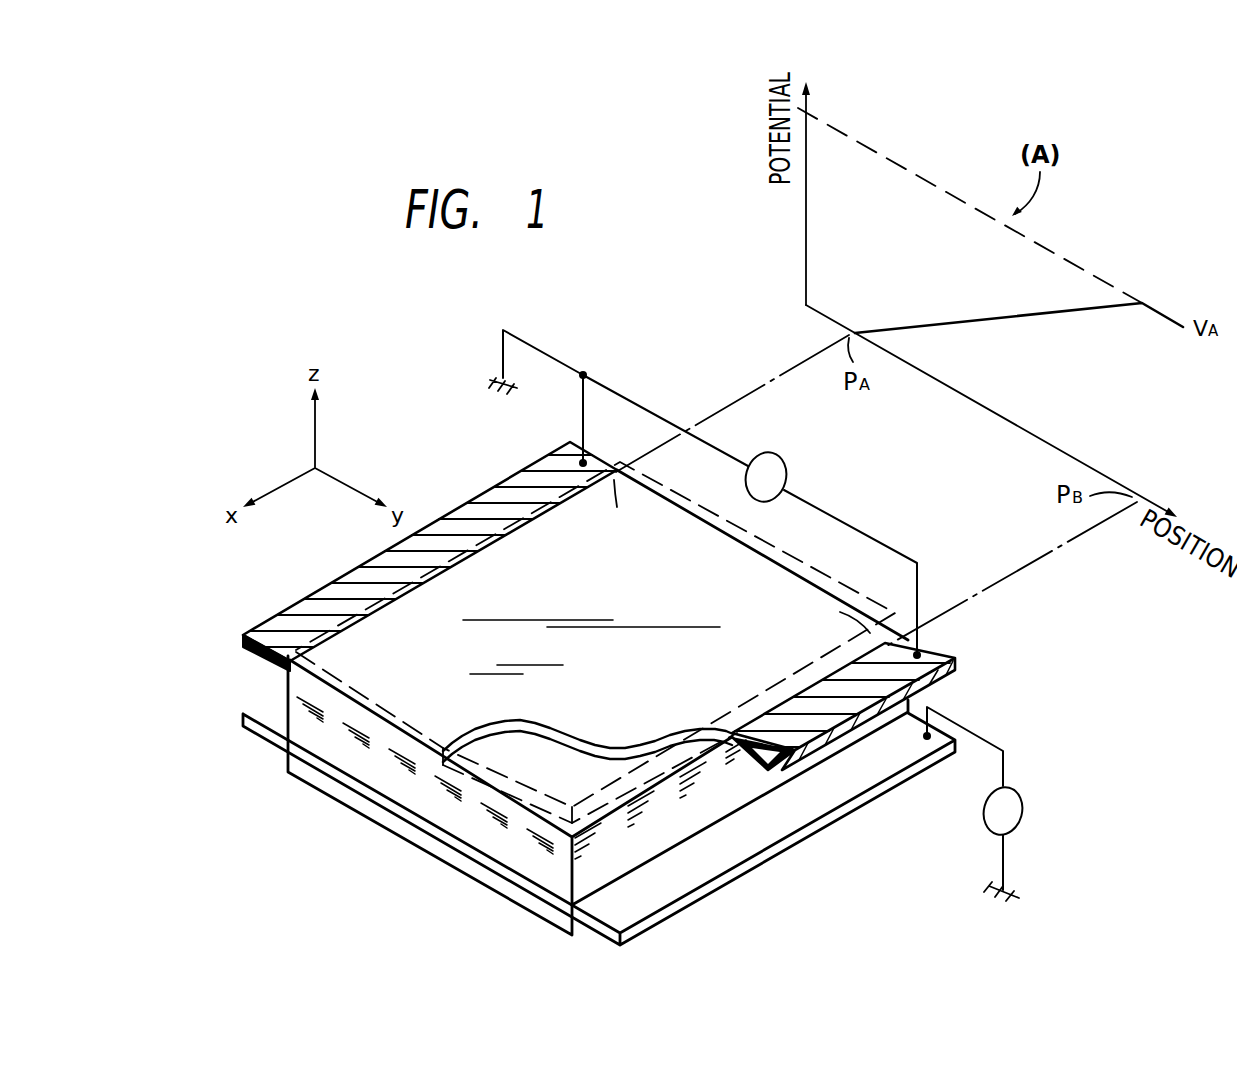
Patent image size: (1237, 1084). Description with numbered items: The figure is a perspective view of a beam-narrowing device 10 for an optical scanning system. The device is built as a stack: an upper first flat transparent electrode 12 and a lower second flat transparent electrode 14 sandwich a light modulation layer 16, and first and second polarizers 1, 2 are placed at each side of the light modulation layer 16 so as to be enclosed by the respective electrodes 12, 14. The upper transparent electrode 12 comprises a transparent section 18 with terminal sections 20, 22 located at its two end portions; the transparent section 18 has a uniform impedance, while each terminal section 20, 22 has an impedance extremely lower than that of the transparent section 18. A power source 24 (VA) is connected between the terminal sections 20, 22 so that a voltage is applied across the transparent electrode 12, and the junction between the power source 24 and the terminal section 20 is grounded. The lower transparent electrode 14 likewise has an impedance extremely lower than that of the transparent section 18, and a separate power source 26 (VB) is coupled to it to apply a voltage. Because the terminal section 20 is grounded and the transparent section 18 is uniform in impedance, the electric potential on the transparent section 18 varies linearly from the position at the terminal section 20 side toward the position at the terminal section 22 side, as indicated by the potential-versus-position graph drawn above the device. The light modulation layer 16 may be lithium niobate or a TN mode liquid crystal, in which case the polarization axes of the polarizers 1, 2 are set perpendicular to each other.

The first polarizer 1 is at (288, 676).
The second polarizer 2 is at (289, 760).
The beam-narrowing device 10 is at (472, 468).
The first flat transparent electrode 12 is at (342, 655).
The second flat transparent electrode 14 is at (329, 772).
The light modulation layer 16 is at (466, 832).
The transparent section 18 is at (784, 584).
The terminal section 20 is at (540, 467).
The terminal section 22 is at (947, 657).
The power source 24 is at (776, 458).
The power source 26 is at (1020, 832).